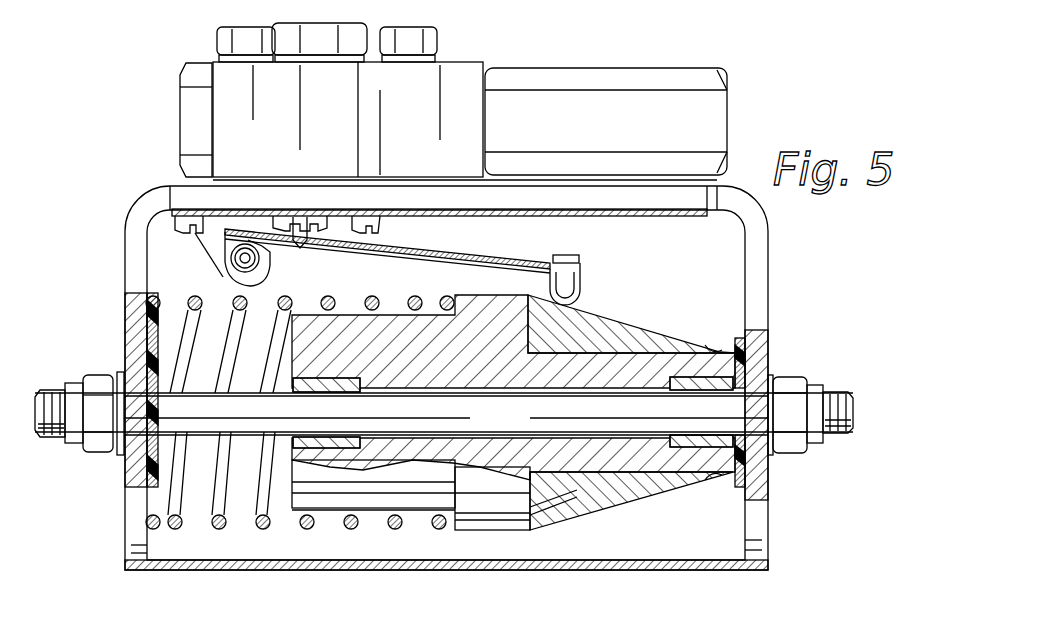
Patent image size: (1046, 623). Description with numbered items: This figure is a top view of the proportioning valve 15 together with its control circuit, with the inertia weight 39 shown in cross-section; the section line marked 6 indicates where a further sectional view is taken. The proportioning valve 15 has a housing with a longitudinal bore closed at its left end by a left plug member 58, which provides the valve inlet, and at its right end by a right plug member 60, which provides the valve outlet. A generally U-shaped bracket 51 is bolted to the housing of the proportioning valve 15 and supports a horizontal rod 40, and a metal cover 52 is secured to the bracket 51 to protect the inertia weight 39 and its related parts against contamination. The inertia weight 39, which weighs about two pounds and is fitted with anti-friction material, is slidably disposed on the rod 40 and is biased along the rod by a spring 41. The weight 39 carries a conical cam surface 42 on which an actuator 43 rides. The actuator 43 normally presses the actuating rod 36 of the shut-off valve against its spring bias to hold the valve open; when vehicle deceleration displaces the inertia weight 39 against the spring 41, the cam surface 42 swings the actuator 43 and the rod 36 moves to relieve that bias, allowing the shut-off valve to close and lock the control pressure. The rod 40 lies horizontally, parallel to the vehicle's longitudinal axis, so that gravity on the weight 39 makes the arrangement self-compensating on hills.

The proportioning valve 15 is at (462, 73).
The left plug member 58 is at (190, 115).
The right plug member 60 is at (663, 77).
The U-shaped bracket 51 is at (758, 307).
The metal cover 52 is at (443, 570).
The actuator 43 is at (490, 252).
The actuating rod 36 is at (300, 250).
The inertia weight 39 is at (478, 297).
The conical cam surface 42 is at (640, 325).
The horizontal rod 40 is at (512, 424).
The spring 41 is at (228, 527).
The section line 6- 6 is at (243, 196).